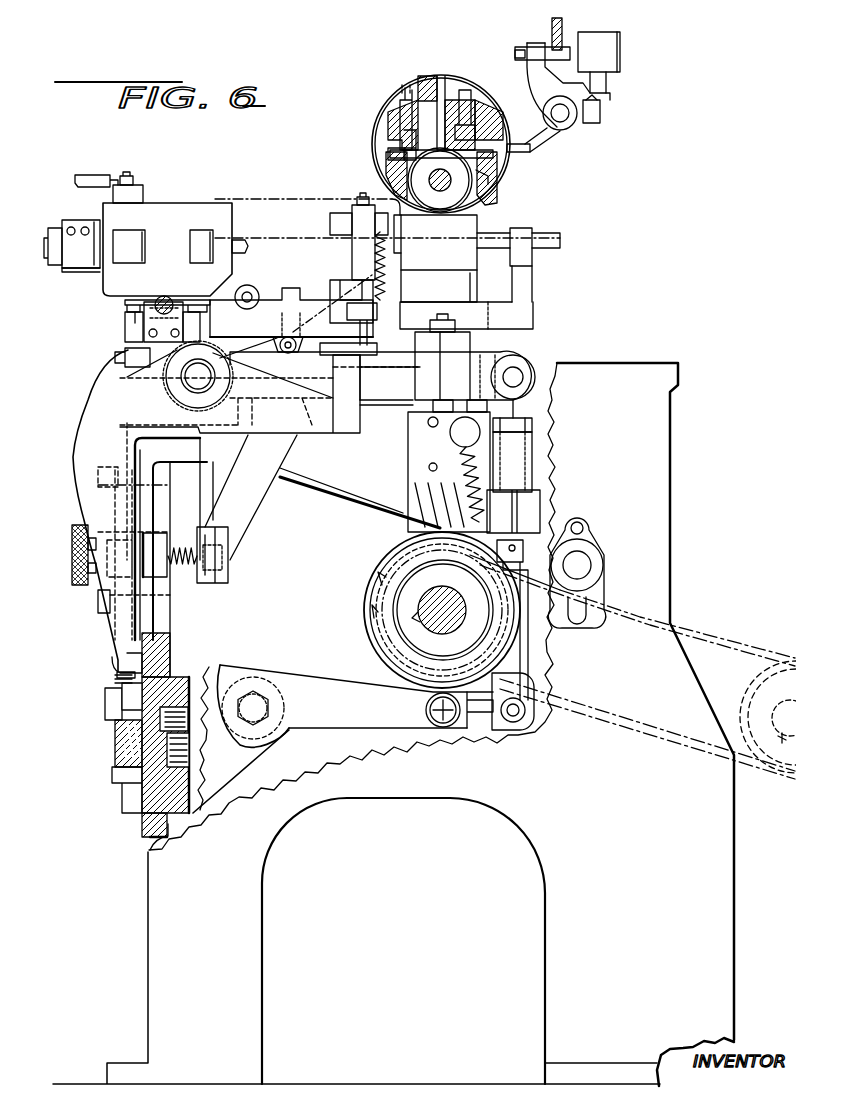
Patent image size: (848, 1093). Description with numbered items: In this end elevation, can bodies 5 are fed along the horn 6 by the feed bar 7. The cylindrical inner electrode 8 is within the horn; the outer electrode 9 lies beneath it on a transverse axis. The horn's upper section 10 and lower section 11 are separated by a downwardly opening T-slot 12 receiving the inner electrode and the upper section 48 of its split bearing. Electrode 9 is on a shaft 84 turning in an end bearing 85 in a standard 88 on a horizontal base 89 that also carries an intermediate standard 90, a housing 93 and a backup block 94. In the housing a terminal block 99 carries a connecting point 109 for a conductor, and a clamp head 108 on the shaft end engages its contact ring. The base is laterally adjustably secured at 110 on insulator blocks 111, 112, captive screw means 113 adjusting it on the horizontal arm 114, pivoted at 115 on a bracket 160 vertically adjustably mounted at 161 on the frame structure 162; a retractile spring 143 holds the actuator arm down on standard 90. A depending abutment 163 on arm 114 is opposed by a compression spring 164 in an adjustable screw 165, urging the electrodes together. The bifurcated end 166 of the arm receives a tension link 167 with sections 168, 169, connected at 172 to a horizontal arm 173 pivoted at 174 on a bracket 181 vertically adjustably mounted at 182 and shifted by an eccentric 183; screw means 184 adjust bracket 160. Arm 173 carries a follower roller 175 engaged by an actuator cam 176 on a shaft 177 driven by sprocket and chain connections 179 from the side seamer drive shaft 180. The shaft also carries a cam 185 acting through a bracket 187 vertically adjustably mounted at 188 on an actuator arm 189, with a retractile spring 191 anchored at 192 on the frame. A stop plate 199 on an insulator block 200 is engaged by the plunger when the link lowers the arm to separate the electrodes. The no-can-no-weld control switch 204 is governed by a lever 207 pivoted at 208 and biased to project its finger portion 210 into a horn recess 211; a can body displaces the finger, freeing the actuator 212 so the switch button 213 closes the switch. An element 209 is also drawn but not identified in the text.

The can bodies 5 is at (398, 105).
The horn 6 is at (441, 90).
The reciprocable feed bar 7 is at (425, 80).
The inner electrode 8 is at (462, 180).
The outer electrode 9 is at (488, 216).
The upper section 10 is at (390, 120).
The lower section 11 is at (388, 150).
The T-slot 12 is at (512, 156).
The upper section of split bearing 48 is at (420, 128).
The shaft 84 is at (243, 253).
The end bearing 85 is at (535, 238).
The standard 88 is at (532, 280).
The horizontal base 89 is at (533, 312).
The intermediate standard 90 is at (358, 215).
The housing 93 is at (173, 215).
The backup block 94 is at (428, 270).
The terminal block 99 is at (135, 197).
The clamp head 108 is at (72, 270).
The connecting point 109 is at (130, 170).
The lateral adjustable securing means 110 is at (432, 324).
The insulator block 111 is at (115, 360).
The insulator block 112 is at (470, 345).
The captive screw means 113 is at (145, 320).
The horizontal arm 114 is at (393, 393).
The pivotal support 115 is at (197, 377).
The retractile spring 143 is at (375, 262).
The bracket 160 is at (73, 450).
The vertical adjustable mounting 161 is at (98, 488).
The frame structure 162 is at (243, 946).
The depending abutment 163 is at (248, 528).
The compression spring 164 is at (185, 570).
The adjustably mounted screw 165 is at (72, 570).
The bifurcated upper end 166 is at (524, 380).
The tension link 167 is at (548, 464).
The upper section 168 is at (532, 435).
The lower section 169 is at (528, 670).
The lower end connection 172 is at (515, 714).
The horizontal arm 173 is at (378, 730).
The pivot 174 is at (260, 700).
The follower roller 175 is at (450, 728).
The actuator cam 176 is at (375, 635).
The shaft 177 is at (456, 620).
The sprocket and chain connections 179 is at (700, 635).
The side seamer drive shaft 180 is at (760, 775).
The bracket 181 is at (235, 808).
The vertical adjustable mounting 182 is at (122, 697).
The eccentric 183 is at (112, 790).
The screw means 184 is at (115, 745).
The actuator cam 185 is at (374, 677).
The bracket 187 is at (480, 500).
The vertical adjustable mounting 188 is at (433, 470).
The actuator arm 189 is at (382, 455).
The retractile spring 191 is at (520, 500).
The anchor point 192 is at (470, 545).
The stop plate 199 is at (345, 290).
The insulator block 200 is at (340, 377).
The no-can-no-weld control switch 204 is at (607, 53).
The lever 207 is at (527, 70).
The pivot 208 is at (570, 120).
The block 209 is at (600, 110).
The finger portion 210 is at (545, 138).
The receiving recess 211 is at (522, 140).
The actuator 212 is at (552, 42).
The switch button 213 is at (583, 53).